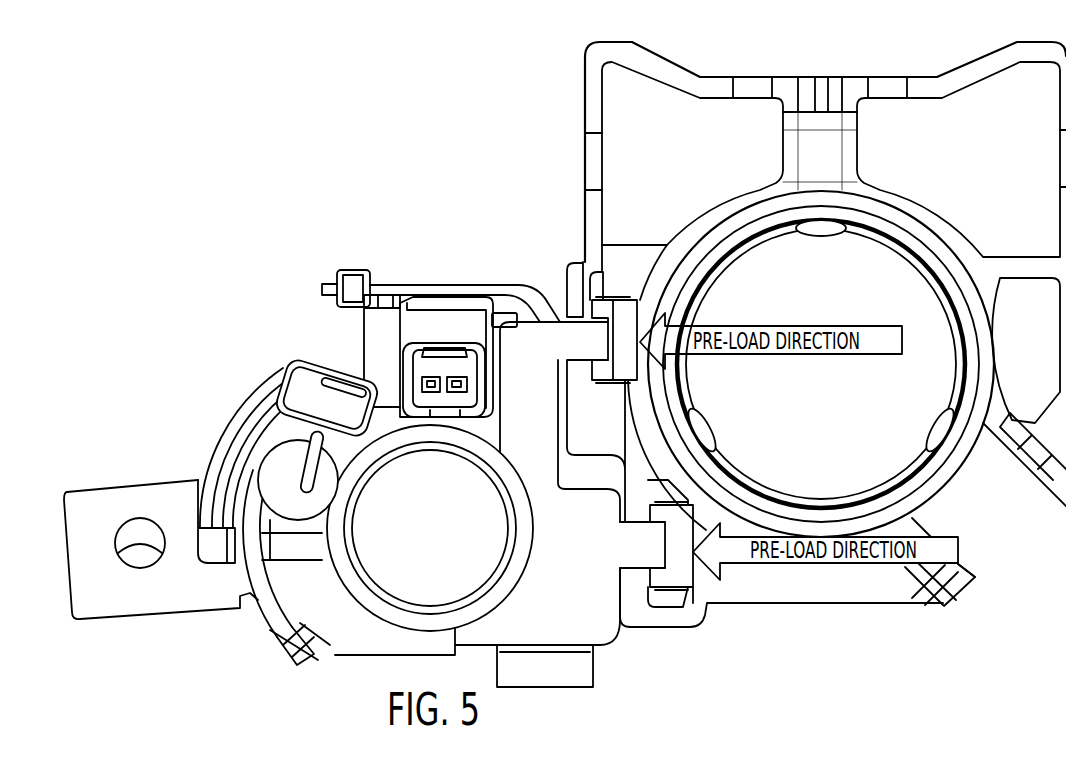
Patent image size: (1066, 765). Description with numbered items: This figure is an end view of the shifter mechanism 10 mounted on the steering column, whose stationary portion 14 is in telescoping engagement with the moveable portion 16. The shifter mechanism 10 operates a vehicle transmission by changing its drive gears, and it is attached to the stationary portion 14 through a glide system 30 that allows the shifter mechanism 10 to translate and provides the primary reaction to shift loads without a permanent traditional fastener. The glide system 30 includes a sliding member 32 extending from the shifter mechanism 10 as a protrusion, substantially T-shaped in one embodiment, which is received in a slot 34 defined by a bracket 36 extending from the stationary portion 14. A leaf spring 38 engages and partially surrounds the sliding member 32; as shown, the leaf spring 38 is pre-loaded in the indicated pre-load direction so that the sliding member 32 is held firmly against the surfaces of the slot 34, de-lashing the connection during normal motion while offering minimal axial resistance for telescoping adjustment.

The shifter mechanism 10 is at (318, 630).
The stationary portion 14 is at (825, 334).
The moveable portion 16 is at (731, 203).
The glide system 30 is at (553, 283).
The sliding member 32 is at (568, 343).
The slot 34 is at (603, 283).
The bracket 36 is at (583, 278).
The leaf spring 38 is at (615, 318).